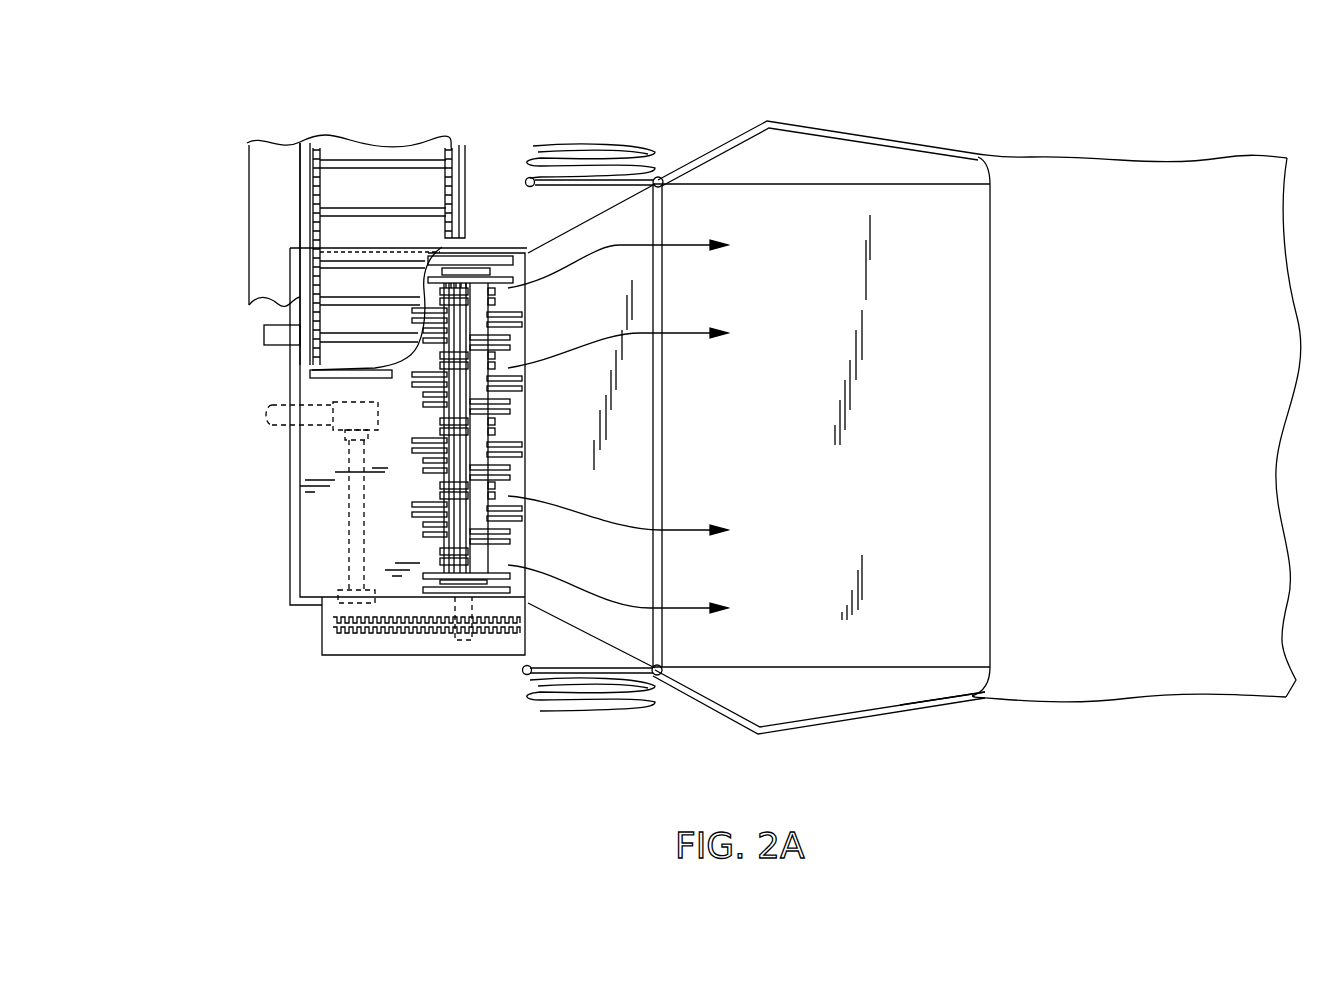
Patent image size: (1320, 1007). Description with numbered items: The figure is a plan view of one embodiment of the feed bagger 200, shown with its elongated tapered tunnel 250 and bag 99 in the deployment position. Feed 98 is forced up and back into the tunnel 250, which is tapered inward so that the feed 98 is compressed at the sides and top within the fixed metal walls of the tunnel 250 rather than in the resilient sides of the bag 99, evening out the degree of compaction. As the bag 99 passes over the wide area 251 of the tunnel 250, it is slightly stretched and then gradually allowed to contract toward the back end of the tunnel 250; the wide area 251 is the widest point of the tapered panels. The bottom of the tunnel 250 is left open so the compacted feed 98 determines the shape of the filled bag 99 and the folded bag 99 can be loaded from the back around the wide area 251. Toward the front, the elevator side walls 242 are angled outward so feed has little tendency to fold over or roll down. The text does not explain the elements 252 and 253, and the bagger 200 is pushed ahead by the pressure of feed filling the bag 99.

The feed bagger 200 is at (858, 98).
The side walls 242 is at (249, 190).
The wide area 251 is at (762, 130).
The bag 99 is at (1133, 155).
The feed 98 is at (785, 262).
The end wall 252 is at (990, 368).
The tunnel 250 is at (922, 449).
The lower panel 253 is at (965, 690).